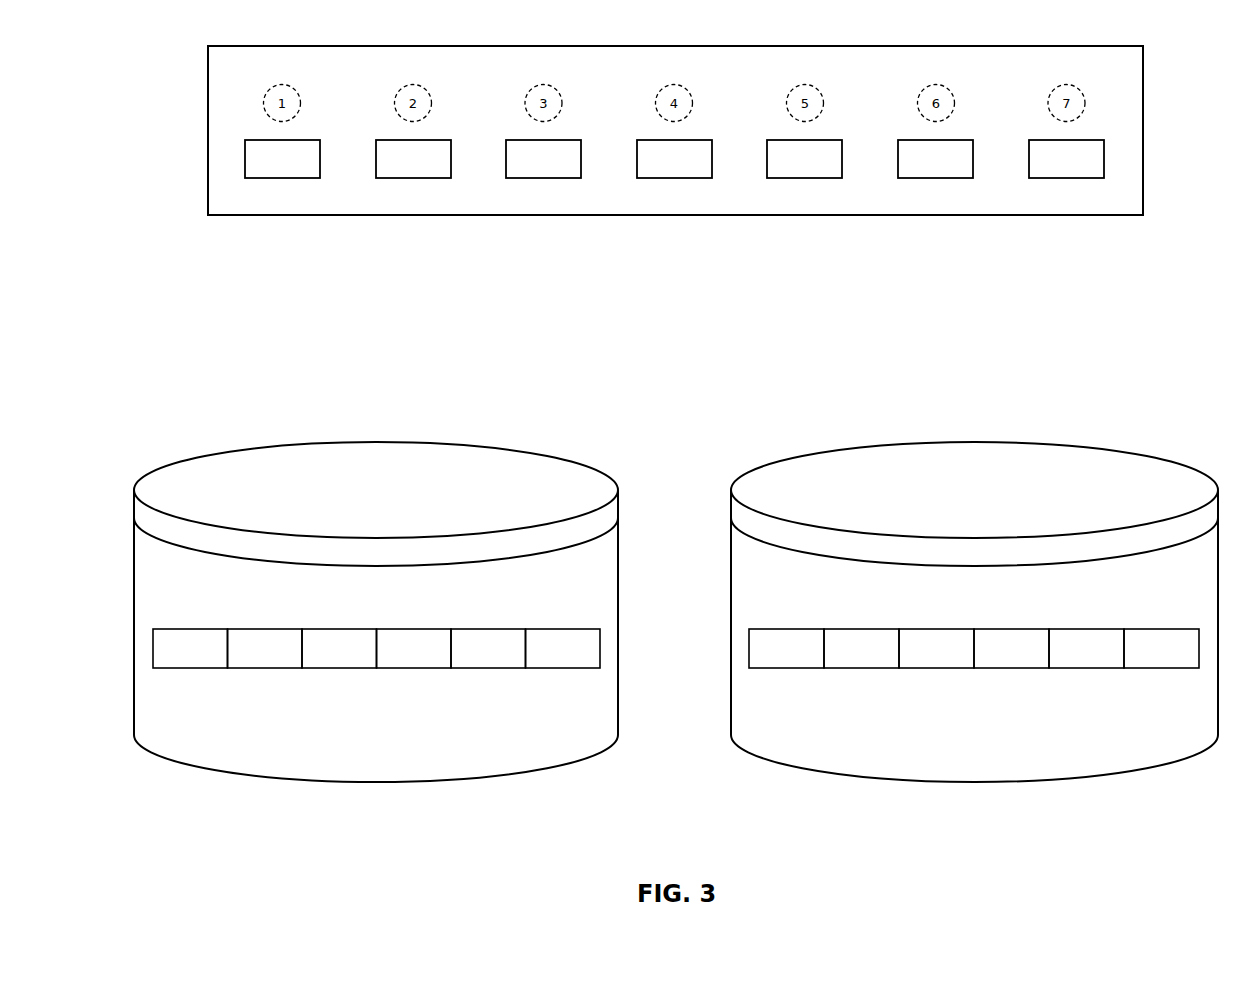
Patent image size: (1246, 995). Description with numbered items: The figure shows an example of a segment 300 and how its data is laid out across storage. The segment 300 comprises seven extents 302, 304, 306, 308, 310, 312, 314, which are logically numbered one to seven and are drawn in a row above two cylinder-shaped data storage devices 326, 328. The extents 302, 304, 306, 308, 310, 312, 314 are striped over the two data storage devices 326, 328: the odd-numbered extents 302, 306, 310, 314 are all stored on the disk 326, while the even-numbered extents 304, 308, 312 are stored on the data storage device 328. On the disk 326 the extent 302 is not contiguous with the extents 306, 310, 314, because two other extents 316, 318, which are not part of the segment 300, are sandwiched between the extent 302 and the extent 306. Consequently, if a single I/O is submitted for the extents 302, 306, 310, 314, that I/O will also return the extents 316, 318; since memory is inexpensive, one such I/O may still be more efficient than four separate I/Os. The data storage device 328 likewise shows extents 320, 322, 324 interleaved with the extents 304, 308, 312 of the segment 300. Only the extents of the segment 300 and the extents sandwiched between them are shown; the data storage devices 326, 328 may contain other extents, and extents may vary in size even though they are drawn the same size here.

The segment 300 is at (703, 130).
The extent 302 is at (236, 404).
The extent 304 is at (600, 404).
The extent 306 is at (479, 404).
The extent 308 is at (805, 404).
The extent 310 is at (646, 404).
The extent 312 is at (1048, 404).
The extent 314 is at (815, 404).
The extent 316 is at (265, 648).
The extent 318 is at (339, 648).
The data element 320 is at (861, 648).
The data element 322 is at (1011, 648).
The data element 324 is at (1086, 648).
The data storage device 326 is at (376, 598).
The data storage device 328 is at (974, 597).